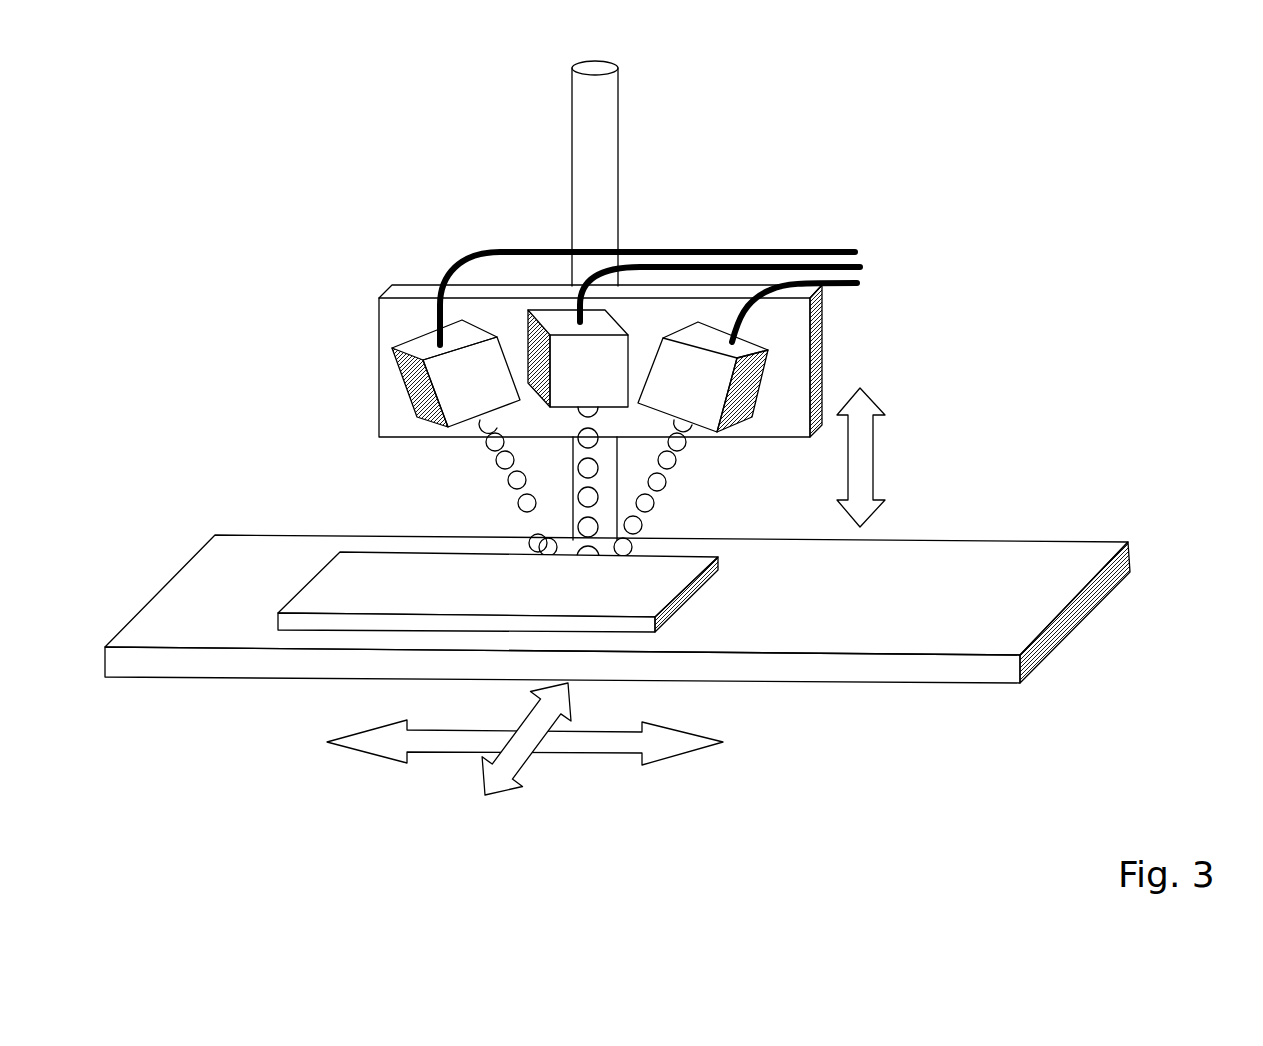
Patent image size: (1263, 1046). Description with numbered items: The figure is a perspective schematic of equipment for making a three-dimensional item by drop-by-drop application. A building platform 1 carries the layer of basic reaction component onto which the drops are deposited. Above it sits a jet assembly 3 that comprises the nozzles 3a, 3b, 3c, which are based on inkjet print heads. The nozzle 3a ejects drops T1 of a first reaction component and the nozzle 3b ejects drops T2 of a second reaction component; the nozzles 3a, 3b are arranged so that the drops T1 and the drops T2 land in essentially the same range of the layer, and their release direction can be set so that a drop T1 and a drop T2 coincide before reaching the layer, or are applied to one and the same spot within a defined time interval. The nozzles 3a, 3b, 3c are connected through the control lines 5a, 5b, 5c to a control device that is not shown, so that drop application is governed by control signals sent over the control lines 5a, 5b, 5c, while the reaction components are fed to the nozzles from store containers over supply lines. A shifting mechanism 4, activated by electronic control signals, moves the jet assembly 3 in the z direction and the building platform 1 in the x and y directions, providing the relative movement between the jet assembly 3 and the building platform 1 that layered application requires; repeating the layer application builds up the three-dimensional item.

The building platform 1 is at (323, 578).
The jet assembly 3 is at (797, 343).
The nozzle 3a is at (442, 380).
The nozzle 3b is at (713, 390).
The nozzle 3c is at (565, 380).
The shifting mechanism 4 is at (600, 133).
The control line 5a is at (497, 253).
The control line 5b is at (850, 280).
The control line 5c is at (865, 267).
The drops of reaction component R1 T1 is at (523, 503).
The drops of reaction component R2 T2 is at (643, 505).